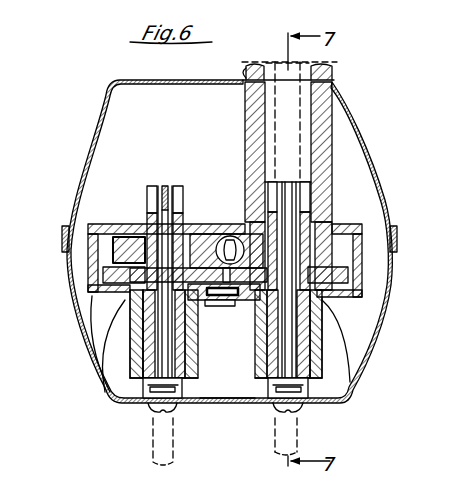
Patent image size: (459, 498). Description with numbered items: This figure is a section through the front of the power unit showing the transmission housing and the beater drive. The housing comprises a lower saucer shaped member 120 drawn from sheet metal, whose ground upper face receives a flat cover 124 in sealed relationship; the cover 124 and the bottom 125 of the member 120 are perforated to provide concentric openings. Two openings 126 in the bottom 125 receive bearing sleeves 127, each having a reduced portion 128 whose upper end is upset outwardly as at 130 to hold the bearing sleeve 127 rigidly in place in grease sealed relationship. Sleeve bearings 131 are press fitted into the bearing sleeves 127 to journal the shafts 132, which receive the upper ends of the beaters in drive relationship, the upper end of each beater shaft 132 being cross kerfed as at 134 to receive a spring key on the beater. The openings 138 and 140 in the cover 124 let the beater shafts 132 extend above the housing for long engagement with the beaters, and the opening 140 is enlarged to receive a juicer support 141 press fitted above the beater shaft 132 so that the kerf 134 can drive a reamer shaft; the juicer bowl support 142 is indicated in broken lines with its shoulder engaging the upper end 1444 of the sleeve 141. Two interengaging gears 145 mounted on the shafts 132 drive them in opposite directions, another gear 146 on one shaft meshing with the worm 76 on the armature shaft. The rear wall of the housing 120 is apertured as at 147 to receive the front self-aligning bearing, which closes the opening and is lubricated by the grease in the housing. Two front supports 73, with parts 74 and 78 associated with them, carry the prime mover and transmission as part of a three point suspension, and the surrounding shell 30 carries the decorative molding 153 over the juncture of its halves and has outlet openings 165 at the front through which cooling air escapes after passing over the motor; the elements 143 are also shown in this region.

The housing shell 30 is at (82, 222).
The decorative molding 153 is at (396, 240).
The juicer support 141 is at (334, 120).
The opening 140 is at (245, 216).
The retaining nut 143 is at (334, 77).
The juicer bowl support 142 is at (338, 62).
The flange 1444 is at (250, 68).
The cover 124 is at (345, 223).
The lower saucer shaped member 120 is at (358, 240).
The opening 138 is at (143, 225).
The gear 146 is at (125, 245).
The interengaging gears 145 is at (100, 272).
The worm 76 is at (223, 234).
The aperture 147 is at (230, 214).
The reduced portion 128 is at (200, 307).
The cross kerf 134 is at (165, 188).
The shaft 132 is at (130, 372).
The upset upper end 130 is at (125, 300).
The openings 126 is at (133, 315).
The bearing sleeve 127 is at (150, 335).
The bottom 125 is at (337, 300).
The sleeve bearing 131 is at (258, 364).
The support 73 is at (148, 400).
The terminal stem 78 is at (162, 405).
The terminal cap 74 is at (292, 410).
The outlet openings 165 is at (195, 403).